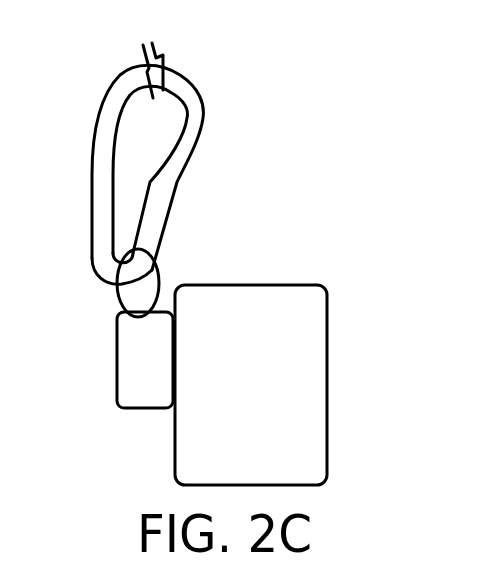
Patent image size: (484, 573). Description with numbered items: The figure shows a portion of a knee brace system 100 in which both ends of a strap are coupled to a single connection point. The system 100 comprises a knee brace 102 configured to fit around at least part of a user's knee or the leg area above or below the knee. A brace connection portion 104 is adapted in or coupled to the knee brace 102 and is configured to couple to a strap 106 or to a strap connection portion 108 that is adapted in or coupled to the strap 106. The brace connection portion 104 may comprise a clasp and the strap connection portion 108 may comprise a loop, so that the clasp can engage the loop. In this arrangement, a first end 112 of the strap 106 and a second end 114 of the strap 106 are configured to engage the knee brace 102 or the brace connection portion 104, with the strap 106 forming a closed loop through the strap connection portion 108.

The system 100 is at (297, 262).
The knee brace 102 is at (308, 348).
The brace connection portion 104 is at (115, 383).
The strap 106 is at (197, 106).
The strap connection portion 108 is at (158, 279).
The first end 112 is at (92, 272).
The second end 114 is at (168, 230).